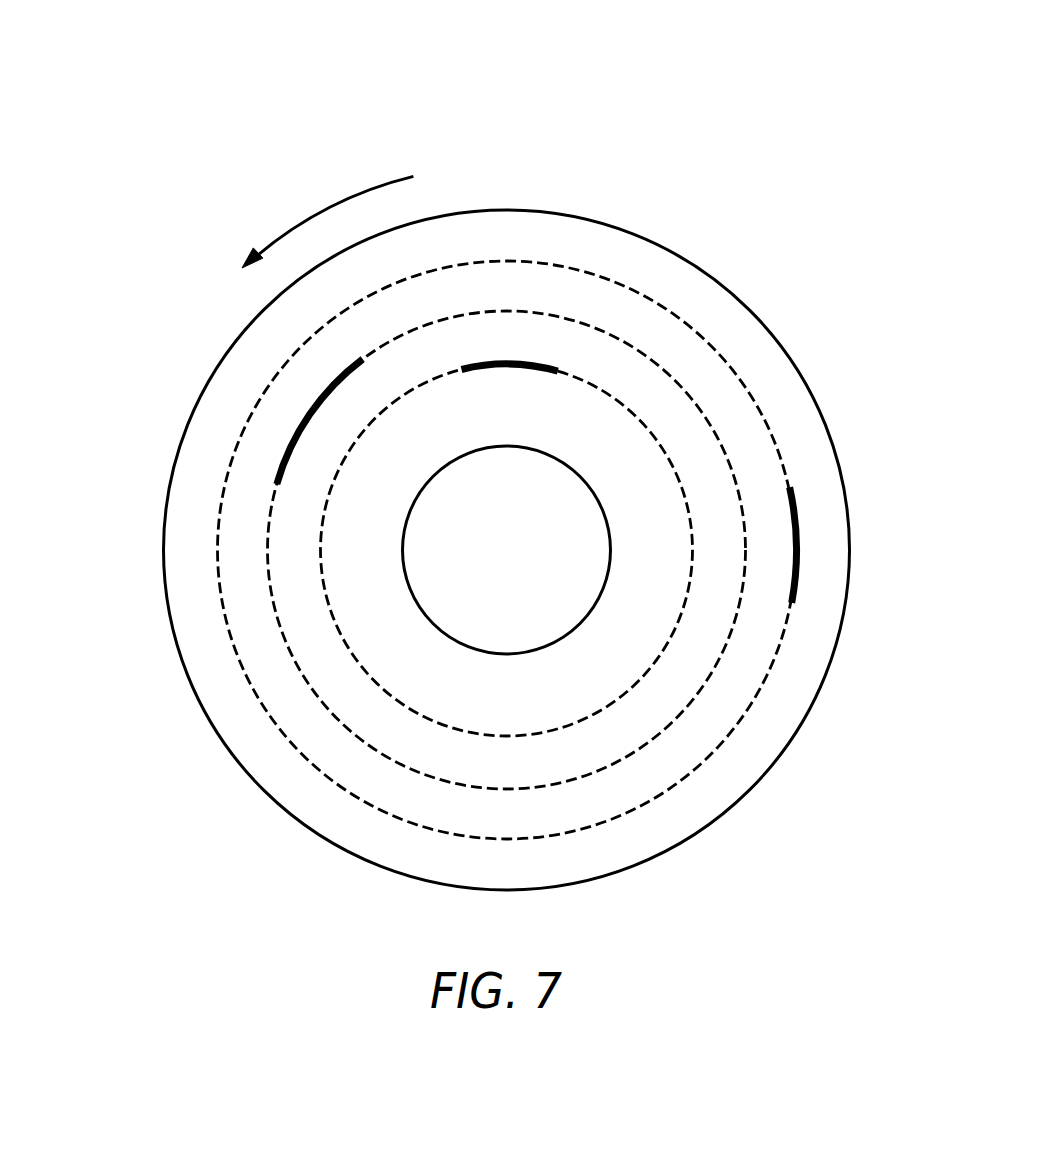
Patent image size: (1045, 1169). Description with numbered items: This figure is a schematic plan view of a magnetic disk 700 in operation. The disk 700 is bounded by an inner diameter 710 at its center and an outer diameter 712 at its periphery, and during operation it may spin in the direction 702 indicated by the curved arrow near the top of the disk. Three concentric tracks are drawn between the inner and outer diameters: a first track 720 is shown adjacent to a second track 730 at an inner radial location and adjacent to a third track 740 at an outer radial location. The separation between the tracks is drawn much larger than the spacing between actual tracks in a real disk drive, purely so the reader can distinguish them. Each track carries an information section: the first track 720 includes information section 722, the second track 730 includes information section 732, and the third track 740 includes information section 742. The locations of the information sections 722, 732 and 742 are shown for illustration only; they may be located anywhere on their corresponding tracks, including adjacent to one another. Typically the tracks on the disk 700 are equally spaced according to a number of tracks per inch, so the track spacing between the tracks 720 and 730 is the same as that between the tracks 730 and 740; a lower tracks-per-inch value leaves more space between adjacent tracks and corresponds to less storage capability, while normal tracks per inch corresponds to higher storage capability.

The magnetic disk 700 is at (137, 48).
The direction 702 is at (283, 230).
The inner diameter 710 is at (403, 580).
The outer diameter 712 is at (175, 645).
The first track 720 is at (693, 592).
The information section 722 is at (520, 362).
The second track 730 is at (712, 678).
The information section 732 is at (288, 438).
The third track 740 is at (728, 740).
The information section 742 is at (800, 537).